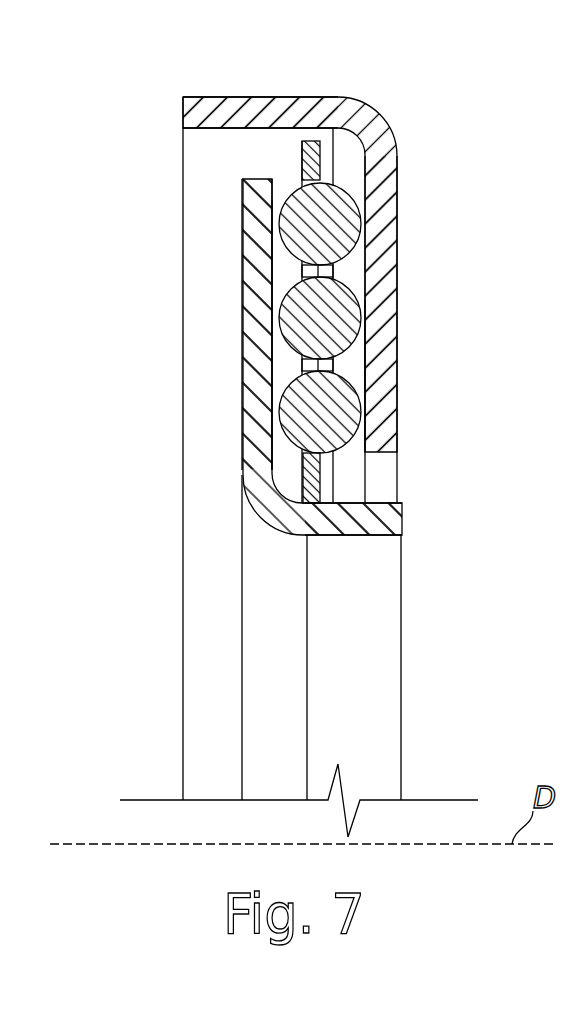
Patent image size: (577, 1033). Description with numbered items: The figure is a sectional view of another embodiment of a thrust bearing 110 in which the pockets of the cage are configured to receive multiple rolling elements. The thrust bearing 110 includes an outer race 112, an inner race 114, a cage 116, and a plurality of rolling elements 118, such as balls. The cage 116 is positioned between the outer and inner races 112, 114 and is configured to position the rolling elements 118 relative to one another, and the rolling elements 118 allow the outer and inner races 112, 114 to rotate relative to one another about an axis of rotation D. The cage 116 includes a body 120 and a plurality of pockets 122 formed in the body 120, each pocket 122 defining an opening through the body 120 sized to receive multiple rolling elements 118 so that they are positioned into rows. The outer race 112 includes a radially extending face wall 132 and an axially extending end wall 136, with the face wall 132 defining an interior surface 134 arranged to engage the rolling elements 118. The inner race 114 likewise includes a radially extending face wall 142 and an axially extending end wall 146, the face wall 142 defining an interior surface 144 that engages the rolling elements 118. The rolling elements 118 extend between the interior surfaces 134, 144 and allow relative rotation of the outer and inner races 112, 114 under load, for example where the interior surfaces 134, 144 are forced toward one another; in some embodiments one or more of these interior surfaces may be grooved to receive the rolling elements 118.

The thrust bearing 110 is at (326, 310).
The outer race 112 is at (305, 300).
The inner race 114 is at (329, 357).
The cage 116 is at (313, 140).
The rolling elements 118 is at (347, 327).
The body 120 is at (313, 495).
The pockets 122 is at (300, 180).
The face wall 132 is at (372, 232).
The interior surface 134 is at (370, 363).
The end wall 136 is at (217, 133).
The face wall 142 is at (245, 318).
The interior surface 144 is at (272, 283).
The end wall 146 is at (367, 520).